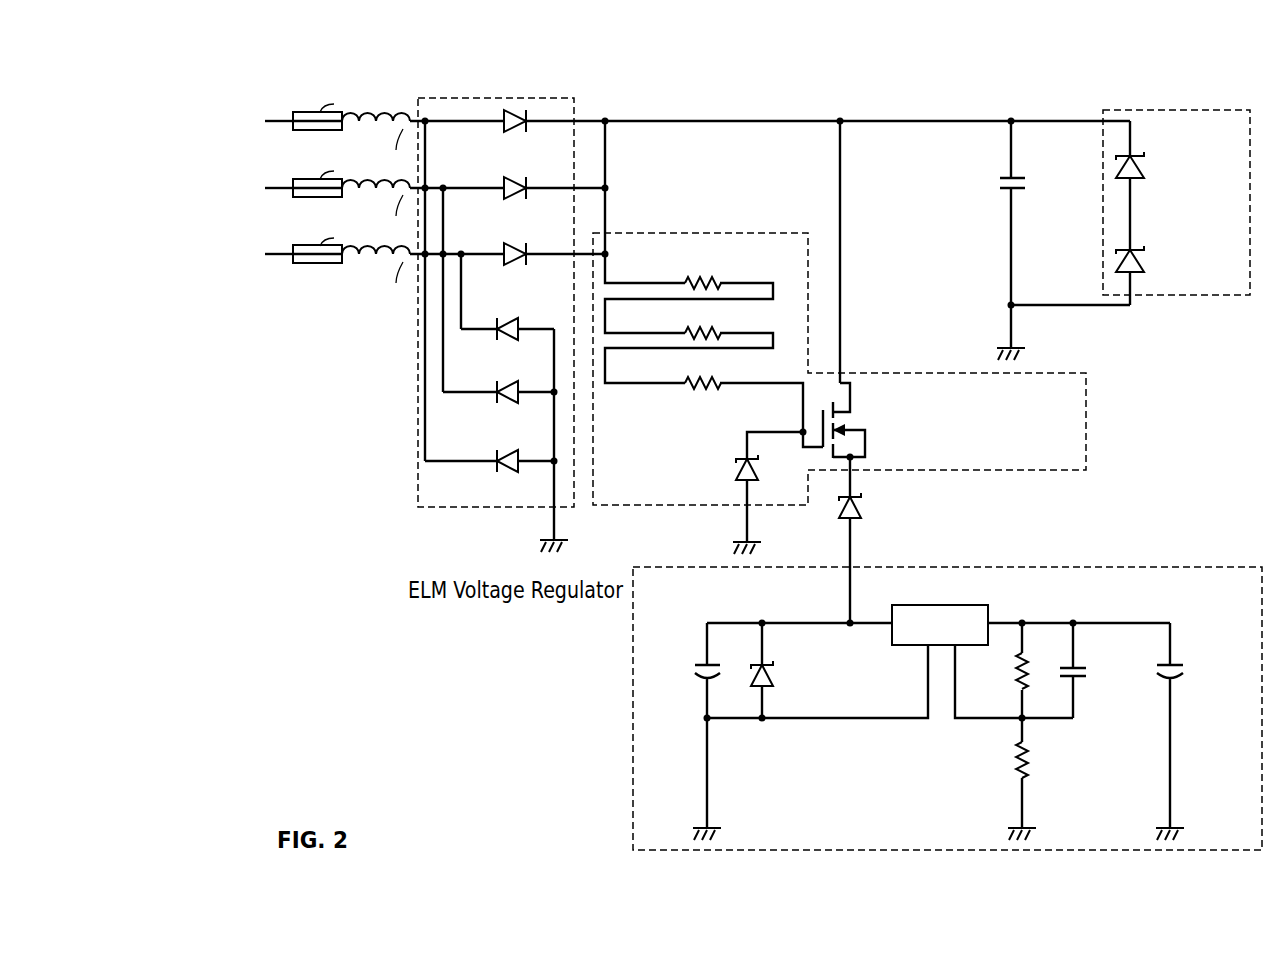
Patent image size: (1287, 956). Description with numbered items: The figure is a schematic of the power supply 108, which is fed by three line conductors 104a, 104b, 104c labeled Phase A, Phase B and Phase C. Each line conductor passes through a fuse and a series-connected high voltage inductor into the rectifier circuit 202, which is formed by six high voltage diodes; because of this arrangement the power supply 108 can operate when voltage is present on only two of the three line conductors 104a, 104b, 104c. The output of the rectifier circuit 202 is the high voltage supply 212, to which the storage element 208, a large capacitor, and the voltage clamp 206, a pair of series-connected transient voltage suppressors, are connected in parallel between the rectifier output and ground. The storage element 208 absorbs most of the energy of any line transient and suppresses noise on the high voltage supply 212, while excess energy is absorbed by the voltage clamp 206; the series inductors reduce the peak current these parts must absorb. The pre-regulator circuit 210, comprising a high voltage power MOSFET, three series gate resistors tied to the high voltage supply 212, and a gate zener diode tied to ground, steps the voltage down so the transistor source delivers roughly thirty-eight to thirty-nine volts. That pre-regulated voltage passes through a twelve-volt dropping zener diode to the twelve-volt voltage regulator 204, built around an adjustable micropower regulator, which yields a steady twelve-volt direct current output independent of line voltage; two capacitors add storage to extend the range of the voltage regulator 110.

The power supply 108 is at (240, 70).
The line conductor 104a is at (279, 122).
The line conductor 104b is at (279, 189).
The line conductor 104c is at (279, 255).
The rectifier circuit 202 is at (513, 98).
The high voltage supply 212 is at (840, 121).
The voltage clamp 206 is at (1190, 110).
The storage element 208 is at (1015, 178).
The pre-regulator circuit 210 is at (1086, 425).
The 12V voltage regulator 204 is at (918, 603).
The 12V voltage regulator 110 is at (1200, 567).